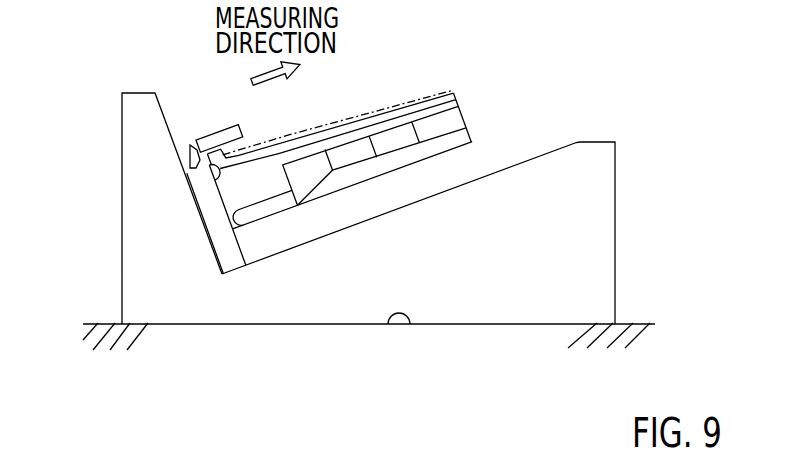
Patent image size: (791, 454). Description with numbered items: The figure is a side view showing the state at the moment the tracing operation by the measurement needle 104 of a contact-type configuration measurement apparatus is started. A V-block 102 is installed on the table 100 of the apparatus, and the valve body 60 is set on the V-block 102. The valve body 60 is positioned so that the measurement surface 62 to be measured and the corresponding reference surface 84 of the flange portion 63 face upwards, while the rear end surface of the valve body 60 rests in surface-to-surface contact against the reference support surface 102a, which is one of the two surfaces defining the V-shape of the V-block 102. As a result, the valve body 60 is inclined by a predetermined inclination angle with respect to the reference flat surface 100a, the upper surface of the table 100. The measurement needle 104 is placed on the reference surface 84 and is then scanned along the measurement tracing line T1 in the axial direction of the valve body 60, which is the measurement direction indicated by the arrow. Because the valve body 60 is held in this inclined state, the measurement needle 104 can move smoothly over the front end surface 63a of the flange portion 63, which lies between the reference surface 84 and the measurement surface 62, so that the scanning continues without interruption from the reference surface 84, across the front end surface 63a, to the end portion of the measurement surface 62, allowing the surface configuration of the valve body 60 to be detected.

The table 100 is at (601, 334).
The reference flat surface 100a is at (410, 324).
The V-block 102 is at (598, 232).
The reference support surface 102a is at (166, 110).
The flange portion 63 is at (229, 268).
The front end surface 63a is at (215, 175).
The reference surface 84 is at (190, 147).
The measurement needle 104 is at (222, 130).
The measurement surface 62 is at (301, 137).
The valve body 60 is at (440, 90).
The measurement tracing line T1 is at (348, 108).